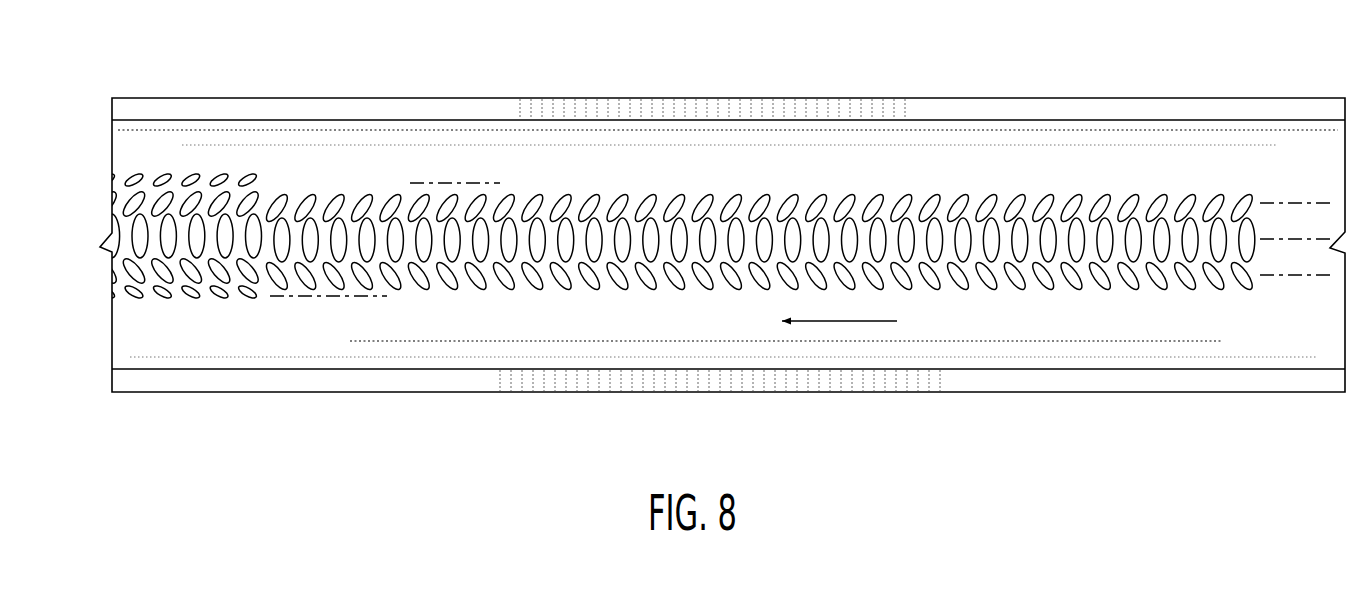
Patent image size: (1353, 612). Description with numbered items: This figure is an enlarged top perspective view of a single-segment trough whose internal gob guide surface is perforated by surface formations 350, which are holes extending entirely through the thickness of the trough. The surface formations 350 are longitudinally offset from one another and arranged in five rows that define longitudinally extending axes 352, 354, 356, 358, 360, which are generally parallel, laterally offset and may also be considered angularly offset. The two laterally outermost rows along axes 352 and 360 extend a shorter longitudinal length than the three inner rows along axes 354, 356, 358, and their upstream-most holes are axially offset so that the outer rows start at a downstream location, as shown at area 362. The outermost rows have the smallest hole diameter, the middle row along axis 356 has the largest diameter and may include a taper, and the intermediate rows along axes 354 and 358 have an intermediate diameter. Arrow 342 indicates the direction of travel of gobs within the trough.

The surface formations 350 is at (228, 165).
The area 362 is at (262, 152).
The longitudinally extending axis 352 is at (433, 183).
The longitudinally extending axis 360 is at (362, 297).
The longitudinally extending axis 354 is at (1287, 203).
The longitudinally extending axis 356 is at (1275, 239).
The longitudinally extending axis 358 is at (1313, 275).
The arrow 342 is at (840, 321).